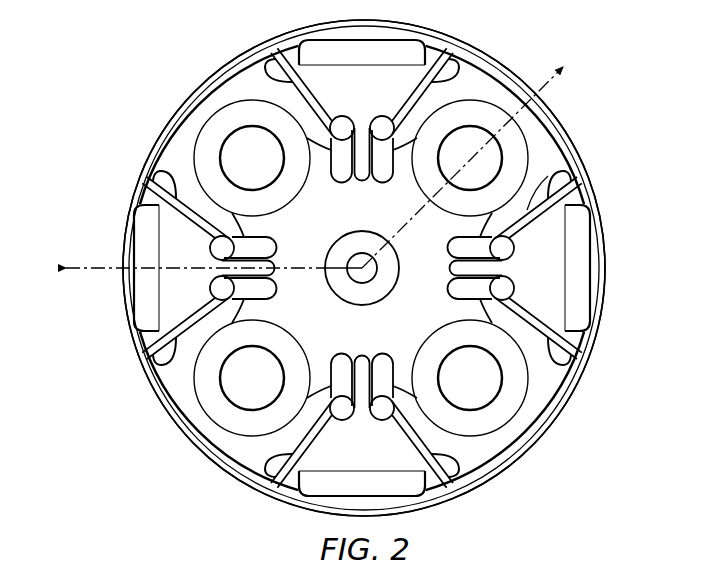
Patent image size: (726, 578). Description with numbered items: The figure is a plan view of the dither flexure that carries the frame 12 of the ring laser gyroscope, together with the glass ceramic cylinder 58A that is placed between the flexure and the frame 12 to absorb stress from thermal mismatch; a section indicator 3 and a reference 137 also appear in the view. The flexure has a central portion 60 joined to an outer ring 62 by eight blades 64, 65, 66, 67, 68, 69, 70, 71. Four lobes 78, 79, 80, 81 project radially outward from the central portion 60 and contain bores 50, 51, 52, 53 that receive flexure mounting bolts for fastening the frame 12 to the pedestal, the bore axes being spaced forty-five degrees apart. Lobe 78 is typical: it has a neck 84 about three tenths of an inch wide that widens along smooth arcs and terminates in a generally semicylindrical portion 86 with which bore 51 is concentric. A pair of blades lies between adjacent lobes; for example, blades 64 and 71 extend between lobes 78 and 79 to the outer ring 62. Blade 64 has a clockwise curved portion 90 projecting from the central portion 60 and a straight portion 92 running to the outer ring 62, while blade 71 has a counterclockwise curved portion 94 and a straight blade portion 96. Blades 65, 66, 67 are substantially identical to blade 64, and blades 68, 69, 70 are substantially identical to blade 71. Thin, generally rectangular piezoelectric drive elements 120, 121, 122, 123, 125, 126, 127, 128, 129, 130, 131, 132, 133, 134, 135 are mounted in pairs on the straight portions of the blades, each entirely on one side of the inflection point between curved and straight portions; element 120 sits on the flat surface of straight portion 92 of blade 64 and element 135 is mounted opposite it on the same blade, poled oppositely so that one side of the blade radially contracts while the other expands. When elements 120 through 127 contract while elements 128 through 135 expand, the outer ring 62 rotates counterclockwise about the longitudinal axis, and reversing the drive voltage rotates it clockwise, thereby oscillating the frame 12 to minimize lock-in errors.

The section line 3- 3 is at (316, 167).
The frame 12 is at (176, 188).
The bore 50 is at (230, 389).
The bore 51 is at (535, 386).
The bore 52 is at (498, 158).
The bore 53 is at (218, 156).
The cylinder 58A is at (176, 108).
The central portion 60 is at (320, 310).
The outer ring 62 is at (158, 167).
The blade 64 is at (588, 364).
The blade 65 is at (284, 493).
The blade 66 is at (150, 199).
The blade 67 is at (427, 50).
The blade 68 is at (456, 499).
The blade 69 is at (148, 311).
The blade 70 is at (322, 46).
The blade 71 is at (589, 203).
The lobe 78 is at (496, 398).
The lobe 79 is at (497, 106).
The lobe 80 is at (220, 107).
The lobe 81 is at (191, 372).
The neck 84 is at (380, 355).
The semicylindrical portion 86 is at (513, 455).
The clockwise curved portion 90 is at (445, 291).
The straight portion 92 is at (591, 297).
The counterclockwise curved portion 94 is at (445, 243).
The straight blade portion 96 is at (560, 191).
The piezoelectric drive element 120 is at (576, 381).
The piezoelectric drive element 121 is at (398, 452).
The piezoelectric drive element 122 is at (292, 464).
The piezoelectric drive element 123 is at (140, 284).
The piezoelectric drive element 125 is at (322, 79).
The piezoelectric drive element 126 is at (457, 62).
The piezoelectric drive element 127 is at (594, 236).
The piezoelectric drive element 128 is at (499, 477).
The piezoelectric drive element 129 is at (318, 472).
The piezoelectric drive element 130 is at (160, 350).
The piezoelectric drive element 131 is at (146, 232).
The piezoelectric drive element 132 is at (287, 57).
The piezoelectric drive element 133 is at (393, 91).
The piezoelectric drive element 134 is at (531, 194).
The piezoelectric drive element 135 is at (592, 280).
The radial slot 137 is at (484, 288).